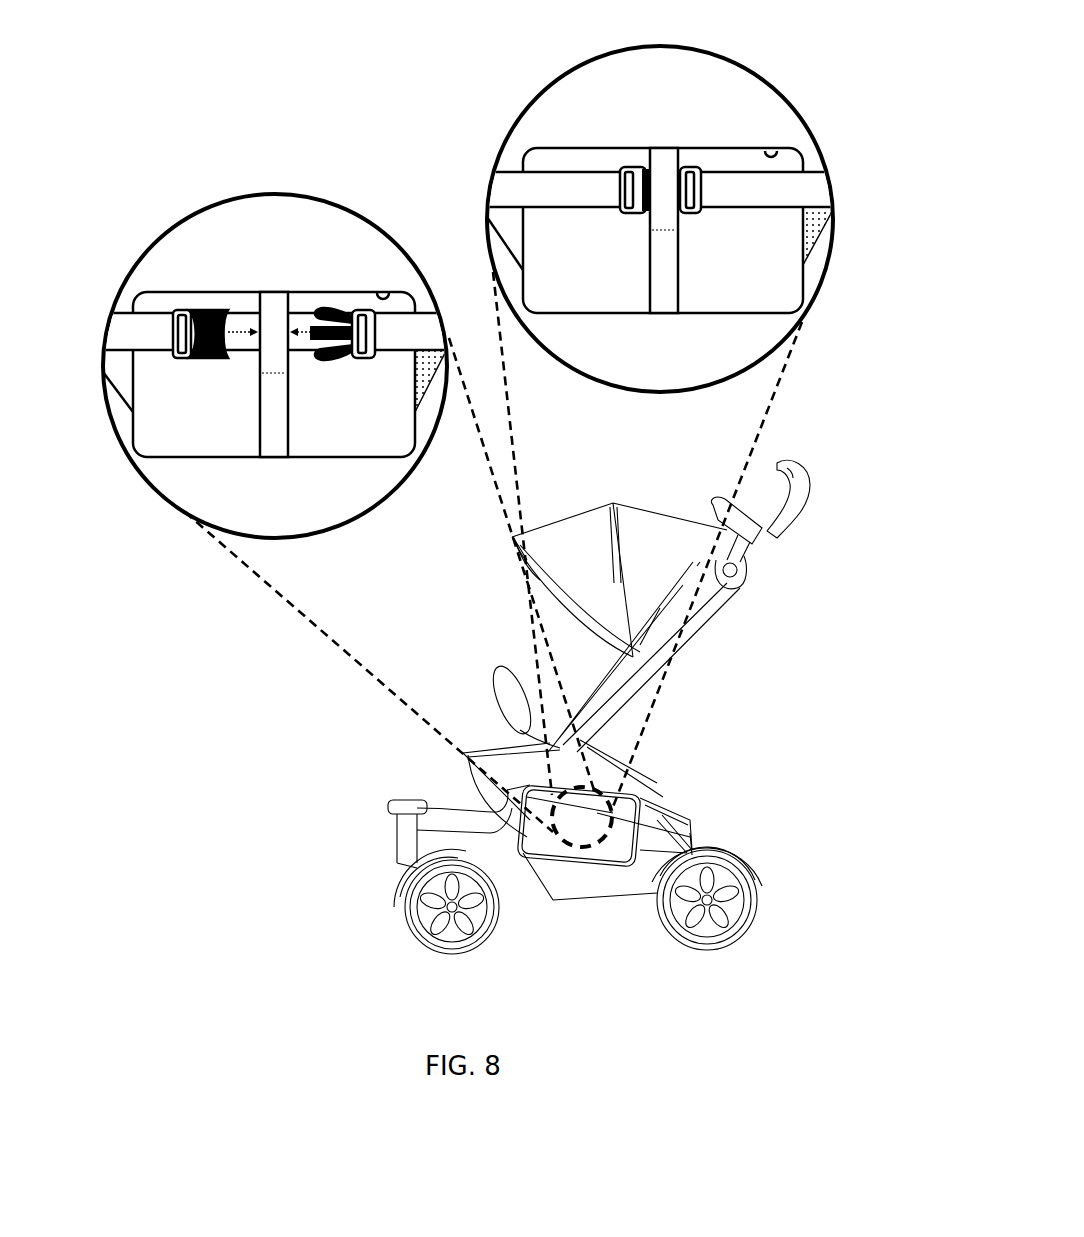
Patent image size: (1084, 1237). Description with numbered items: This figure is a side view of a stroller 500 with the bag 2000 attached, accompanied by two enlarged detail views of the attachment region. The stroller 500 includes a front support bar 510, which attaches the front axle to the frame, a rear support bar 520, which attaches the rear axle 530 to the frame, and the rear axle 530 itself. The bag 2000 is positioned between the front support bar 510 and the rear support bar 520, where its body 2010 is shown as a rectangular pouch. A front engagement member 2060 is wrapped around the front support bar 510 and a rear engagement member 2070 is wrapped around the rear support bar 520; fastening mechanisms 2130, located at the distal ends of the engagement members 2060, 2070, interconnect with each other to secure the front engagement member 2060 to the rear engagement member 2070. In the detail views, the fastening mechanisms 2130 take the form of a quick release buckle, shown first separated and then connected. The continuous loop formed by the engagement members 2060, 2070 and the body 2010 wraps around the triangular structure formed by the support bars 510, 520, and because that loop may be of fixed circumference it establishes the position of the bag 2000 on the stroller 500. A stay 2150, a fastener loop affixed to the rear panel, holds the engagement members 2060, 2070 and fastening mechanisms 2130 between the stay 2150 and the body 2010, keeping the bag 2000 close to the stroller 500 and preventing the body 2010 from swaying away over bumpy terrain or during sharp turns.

The stroller 500 is at (676, 500).
The front support bar 510 is at (447, 830).
The rear support bar 520 is at (662, 790).
The rear axle 530 is at (714, 915).
The bag 2000 is at (577, 864).
The body 2010 is at (377, 454).
The front engagement member 2060 is at (140, 313).
The rear engagement member 2070 is at (403, 313).
The fastening mechanisms 2130 is at (205, 312).
The stay 2150 is at (258, 413).